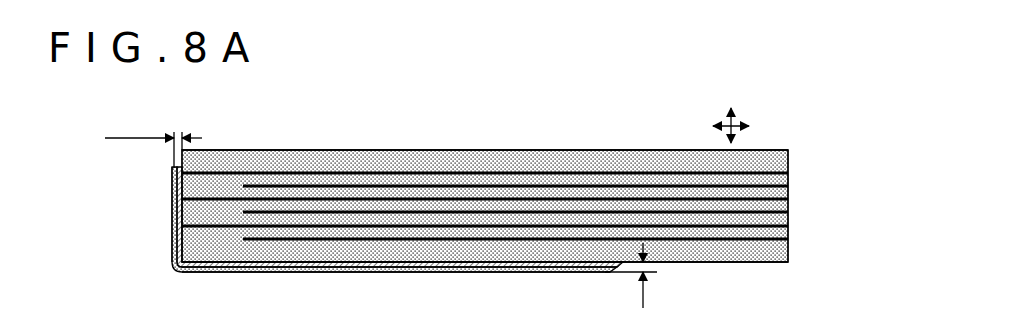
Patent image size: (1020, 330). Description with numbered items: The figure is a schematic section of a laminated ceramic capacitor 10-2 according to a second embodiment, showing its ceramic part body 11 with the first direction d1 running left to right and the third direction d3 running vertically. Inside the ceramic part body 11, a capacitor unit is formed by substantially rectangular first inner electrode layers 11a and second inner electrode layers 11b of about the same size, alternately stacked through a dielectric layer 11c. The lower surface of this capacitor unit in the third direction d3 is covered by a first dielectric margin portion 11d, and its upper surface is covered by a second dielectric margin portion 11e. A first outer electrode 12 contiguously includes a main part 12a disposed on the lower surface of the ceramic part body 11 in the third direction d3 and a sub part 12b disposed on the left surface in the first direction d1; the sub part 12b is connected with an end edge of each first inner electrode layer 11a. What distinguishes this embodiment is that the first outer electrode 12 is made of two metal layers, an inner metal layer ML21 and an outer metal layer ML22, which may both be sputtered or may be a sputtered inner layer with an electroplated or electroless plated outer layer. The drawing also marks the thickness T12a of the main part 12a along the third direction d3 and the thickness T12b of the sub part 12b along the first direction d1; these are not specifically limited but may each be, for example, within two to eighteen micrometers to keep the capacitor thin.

The laminated ceramic capacitor 10-2 is at (257, 148).
The ceramic part body 11 is at (482, 149).
The first inner electrode layer 11a is at (788, 171).
The second inner electrode layer 11b is at (788, 186).
The dielectric layer 11c is at (788, 205).
The first dielectric margin portion 11d is at (683, 256).
The second dielectric margin portion 11e is at (684, 160).
The first outer electrode 12 is at (364, 248).
The main part 12a is at (393, 274).
The sub part 12b is at (171, 217).
The inner metal layer ML21 is at (283, 274).
The outer metal layer ML22 is at (231, 270).
The thickness of main part T12a is at (626, 276).
The thickness of sub part T12b is at (153, 143).
The first direction d1 is at (742, 128).
The third direction d3 is at (731, 116).